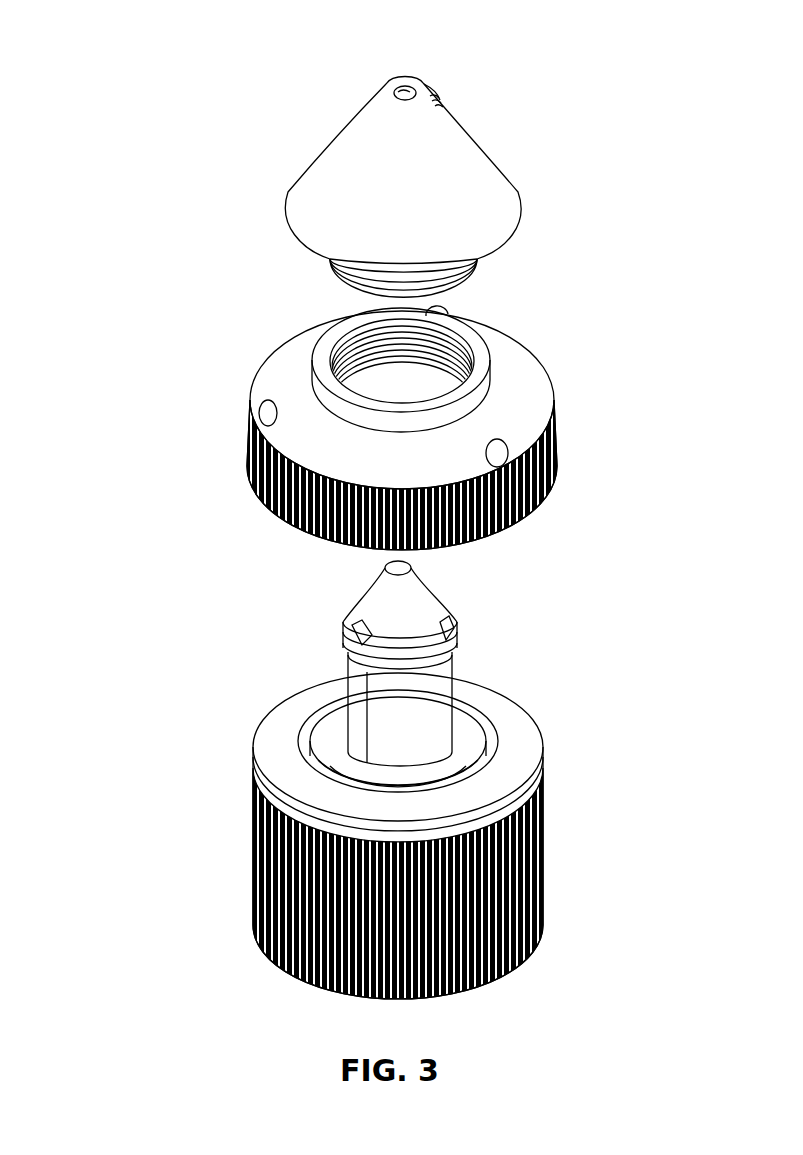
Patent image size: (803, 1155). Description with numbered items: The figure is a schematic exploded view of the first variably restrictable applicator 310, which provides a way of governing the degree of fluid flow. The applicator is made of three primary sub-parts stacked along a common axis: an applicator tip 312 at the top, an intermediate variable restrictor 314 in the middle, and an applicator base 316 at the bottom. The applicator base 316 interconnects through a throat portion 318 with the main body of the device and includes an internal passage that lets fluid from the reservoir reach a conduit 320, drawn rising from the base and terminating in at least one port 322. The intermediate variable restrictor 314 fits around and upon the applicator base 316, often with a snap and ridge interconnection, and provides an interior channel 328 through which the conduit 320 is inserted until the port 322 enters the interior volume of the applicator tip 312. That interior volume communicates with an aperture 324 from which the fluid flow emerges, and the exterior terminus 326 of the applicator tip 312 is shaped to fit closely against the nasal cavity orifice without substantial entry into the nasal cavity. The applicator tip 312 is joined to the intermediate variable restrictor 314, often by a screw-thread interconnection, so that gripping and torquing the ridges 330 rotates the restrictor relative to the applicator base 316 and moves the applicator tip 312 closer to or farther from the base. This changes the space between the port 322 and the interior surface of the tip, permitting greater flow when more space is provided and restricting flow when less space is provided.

The first variably restrictable applicator 310 is at (178, 160).
The applicator tip 312 is at (518, 193).
The intermediate variable restrictor 314 is at (530, 385).
The applicator base 316 is at (497, 717).
The throat portion 318 is at (247, 830).
The conduit 320 is at (330, 652).
The port 322 is at (457, 610).
The aperture 324 is at (395, 82).
The exterior terminus 326 is at (427, 74).
The interior channel 328 is at (386, 368).
The ridges 330 is at (258, 452).